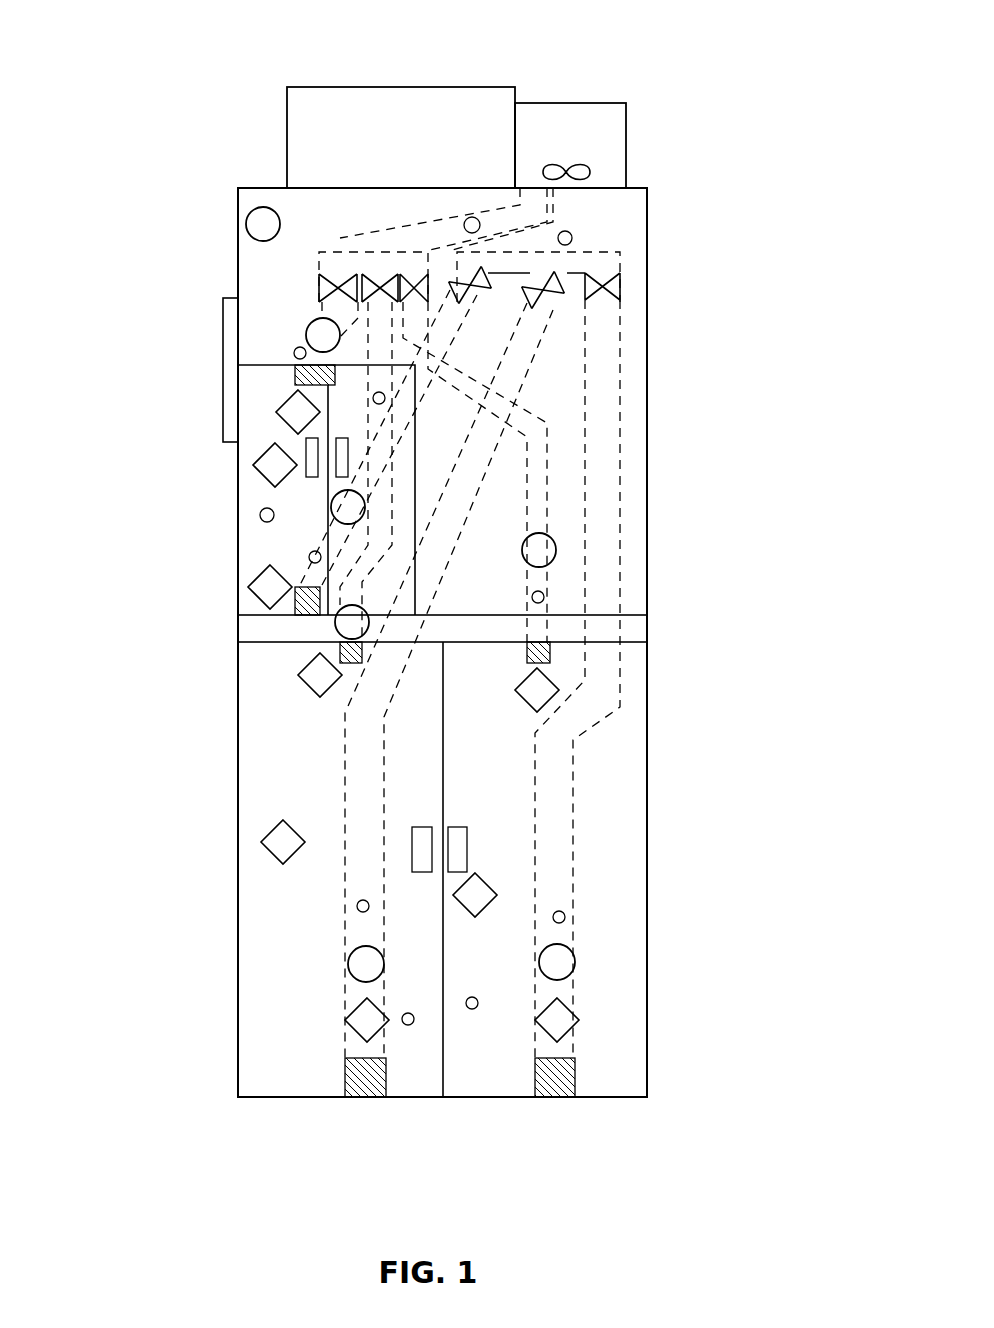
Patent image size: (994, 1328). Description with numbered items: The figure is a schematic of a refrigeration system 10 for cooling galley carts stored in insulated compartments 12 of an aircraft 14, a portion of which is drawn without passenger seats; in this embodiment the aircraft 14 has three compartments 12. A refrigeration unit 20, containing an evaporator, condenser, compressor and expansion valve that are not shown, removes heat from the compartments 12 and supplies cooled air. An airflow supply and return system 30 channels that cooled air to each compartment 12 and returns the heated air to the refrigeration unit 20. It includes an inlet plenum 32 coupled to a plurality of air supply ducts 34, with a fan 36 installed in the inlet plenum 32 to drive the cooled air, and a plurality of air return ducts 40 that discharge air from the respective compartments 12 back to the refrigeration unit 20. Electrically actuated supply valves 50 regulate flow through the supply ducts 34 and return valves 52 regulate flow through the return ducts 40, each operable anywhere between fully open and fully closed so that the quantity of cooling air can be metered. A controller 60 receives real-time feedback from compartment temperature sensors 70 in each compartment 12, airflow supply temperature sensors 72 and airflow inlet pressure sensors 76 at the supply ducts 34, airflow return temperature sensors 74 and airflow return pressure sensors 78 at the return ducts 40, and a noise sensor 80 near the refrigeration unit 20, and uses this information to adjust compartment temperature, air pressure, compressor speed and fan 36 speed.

The refrigeration system 10 is at (405, 48).
The compartment 12 is at (335, 497).
The aircraft 14 is at (750, 540).
The refrigeration unit 20 is at (298, 87).
The airflow supply and return system 30 is at (685, 225).
The inlet plenum 32 is at (474, 217).
The air supply duct 34 is at (310, 322).
The fan 36 is at (580, 163).
The air return duct 40 is at (248, 587).
The supply valve 50 is at (410, 258).
The return valve 52 is at (498, 260).
The controller 60 is at (222, 327).
The compartment temperature sensor 70 is at (256, 463).
The airflow supply temperature sensor 72 is at (280, 405).
The airflow return temperature sensor 74 is at (252, 612).
The airflow inlet pressure sensor 76 is at (306, 335).
The airflow return pressure sensor 78 is at (260, 515).
The noise sensor 80 is at (246, 213).